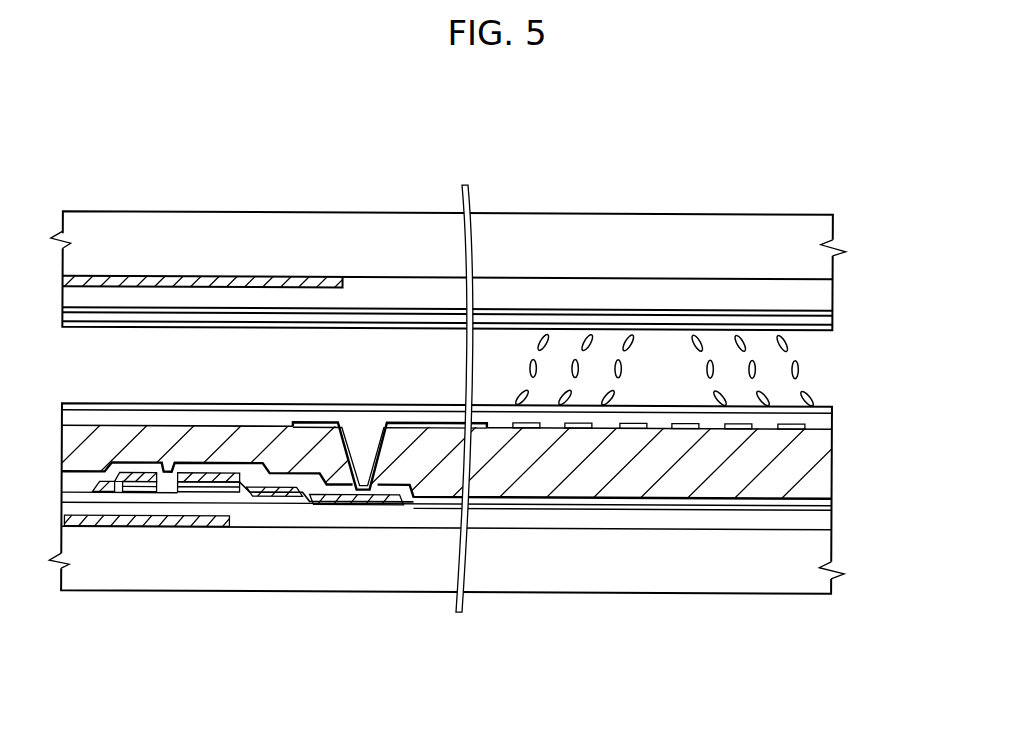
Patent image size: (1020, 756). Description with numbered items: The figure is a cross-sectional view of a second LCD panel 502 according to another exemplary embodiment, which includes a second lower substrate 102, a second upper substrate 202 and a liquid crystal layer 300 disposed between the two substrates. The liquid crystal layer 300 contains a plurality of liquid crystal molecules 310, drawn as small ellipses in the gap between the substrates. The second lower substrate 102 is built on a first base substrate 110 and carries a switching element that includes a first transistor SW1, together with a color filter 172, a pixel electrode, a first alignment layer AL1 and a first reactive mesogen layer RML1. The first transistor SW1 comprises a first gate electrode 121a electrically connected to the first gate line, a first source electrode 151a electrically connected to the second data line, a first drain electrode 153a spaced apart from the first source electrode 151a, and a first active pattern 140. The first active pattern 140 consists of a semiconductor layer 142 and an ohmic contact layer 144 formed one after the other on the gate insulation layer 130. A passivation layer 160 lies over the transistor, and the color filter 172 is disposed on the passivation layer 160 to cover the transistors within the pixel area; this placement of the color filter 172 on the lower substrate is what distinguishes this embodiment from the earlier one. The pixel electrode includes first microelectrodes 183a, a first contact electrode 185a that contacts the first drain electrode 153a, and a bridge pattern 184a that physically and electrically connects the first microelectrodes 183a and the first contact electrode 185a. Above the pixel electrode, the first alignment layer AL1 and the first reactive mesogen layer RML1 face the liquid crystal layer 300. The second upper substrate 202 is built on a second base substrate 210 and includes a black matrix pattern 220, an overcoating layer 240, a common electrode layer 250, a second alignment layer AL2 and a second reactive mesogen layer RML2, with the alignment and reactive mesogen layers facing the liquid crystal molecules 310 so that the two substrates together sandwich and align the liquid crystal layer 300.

The second LCD panel 502 is at (474, 129).
The second upper substrate 202 is at (848, 213).
The second base substrate 210 is at (184, 222).
The black matrix pattern 220 is at (268, 278).
The overcoating layer 240 is at (401, 305).
The common electrode layer 250 is at (561, 314).
The second alignment layer AL2 is at (650, 323).
The second reactive mesogen layer RML2 is at (747, 329).
The liquid crystal layer 300 is at (848, 333).
The liquid crystal molecules 310 is at (530, 368).
The second lower substrate 102 is at (848, 407).
The first base substrate 110 is at (490, 593).
The gate insulation layer 130 is at (536, 520).
The passivation layer 160 is at (582, 503).
The first alignment layer AL1 is at (607, 421).
The first reactive mesogen layer RML1 is at (667, 412).
The color filter 172 is at (717, 489).
The first microelectrodes 183a is at (790, 429).
The bridge pattern 184a is at (432, 430).
The first contact electrode 185a is at (360, 492).
The first transistor SW1 is at (292, 663).
The first source electrode 151a is at (140, 482).
The first gate electrode 121a is at (158, 524).
The first drain electrode 153a is at (205, 482).
The first active pattern 140 is at (318, 627).
The semiconductor layer 142 is at (262, 506).
The ohmic contact layer 144 is at (287, 499).